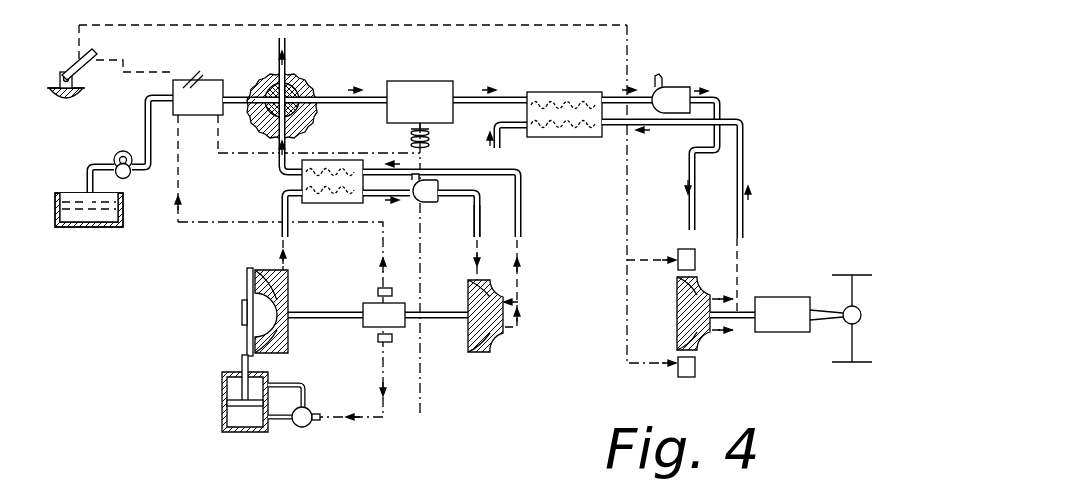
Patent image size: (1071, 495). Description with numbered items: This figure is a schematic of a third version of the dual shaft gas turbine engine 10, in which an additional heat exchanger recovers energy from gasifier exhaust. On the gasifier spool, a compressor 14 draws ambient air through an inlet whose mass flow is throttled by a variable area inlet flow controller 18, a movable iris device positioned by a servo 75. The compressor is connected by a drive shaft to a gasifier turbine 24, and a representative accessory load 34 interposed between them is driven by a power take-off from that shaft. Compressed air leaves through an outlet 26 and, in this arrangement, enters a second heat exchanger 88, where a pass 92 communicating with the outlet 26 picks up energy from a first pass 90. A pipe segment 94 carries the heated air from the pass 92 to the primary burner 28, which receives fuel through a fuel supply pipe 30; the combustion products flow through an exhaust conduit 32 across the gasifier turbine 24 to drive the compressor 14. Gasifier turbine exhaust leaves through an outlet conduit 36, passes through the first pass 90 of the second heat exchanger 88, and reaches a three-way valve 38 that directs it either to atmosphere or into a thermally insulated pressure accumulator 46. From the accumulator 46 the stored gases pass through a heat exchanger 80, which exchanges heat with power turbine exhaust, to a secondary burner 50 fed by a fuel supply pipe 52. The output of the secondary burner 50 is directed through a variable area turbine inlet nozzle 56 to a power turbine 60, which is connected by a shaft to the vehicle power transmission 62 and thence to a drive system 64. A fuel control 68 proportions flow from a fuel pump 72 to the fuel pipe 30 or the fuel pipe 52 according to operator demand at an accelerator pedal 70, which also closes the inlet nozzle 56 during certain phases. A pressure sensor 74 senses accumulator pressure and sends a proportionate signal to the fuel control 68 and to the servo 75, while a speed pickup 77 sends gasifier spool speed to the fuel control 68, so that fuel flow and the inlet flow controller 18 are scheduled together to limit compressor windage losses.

The dual shaft gas turbine engine 10 is at (590, 58).
The compressor 14 is at (289, 333).
The variable area inlet flow controller 18 is at (246, 296).
The gasifier turbine 24 is at (470, 354).
The outlet 26 is at (283, 232).
The primary burner 28 is at (436, 204).
The fuel supply pipe 30 is at (416, 177).
The exhaust conduit 32 is at (481, 218).
The accessory load 34 is at (405, 326).
The outlet conduit 36 is at (522, 229).
The three-way valve 38 is at (300, 85).
The pressure accumulator 46 is at (440, 85).
The secondary burner 50 is at (692, 90).
The fuel supply pipe 52 is at (662, 80).
The variable area turbine inlet nozzle 56 is at (700, 367).
The power turbine 60 is at (675, 315).
The vehicle power transmission 62 is at (783, 300).
The drive system 64 is at (861, 319).
The fuel control 68 is at (200, 80).
The accelerator pedal 70 is at (96, 52).
The fuel pump 72 is at (120, 152).
The pressure sensor 74 is at (410, 138).
The servo 75 is at (250, 433).
The speed pickup 77 is at (377, 292).
The heat exchanger 80 is at (598, 90).
The second heat exchanger 88 is at (352, 203).
The first pass 90 is at (300, 178).
The pass 92 is at (330, 205).
The pipe segment 94 is at (380, 195).